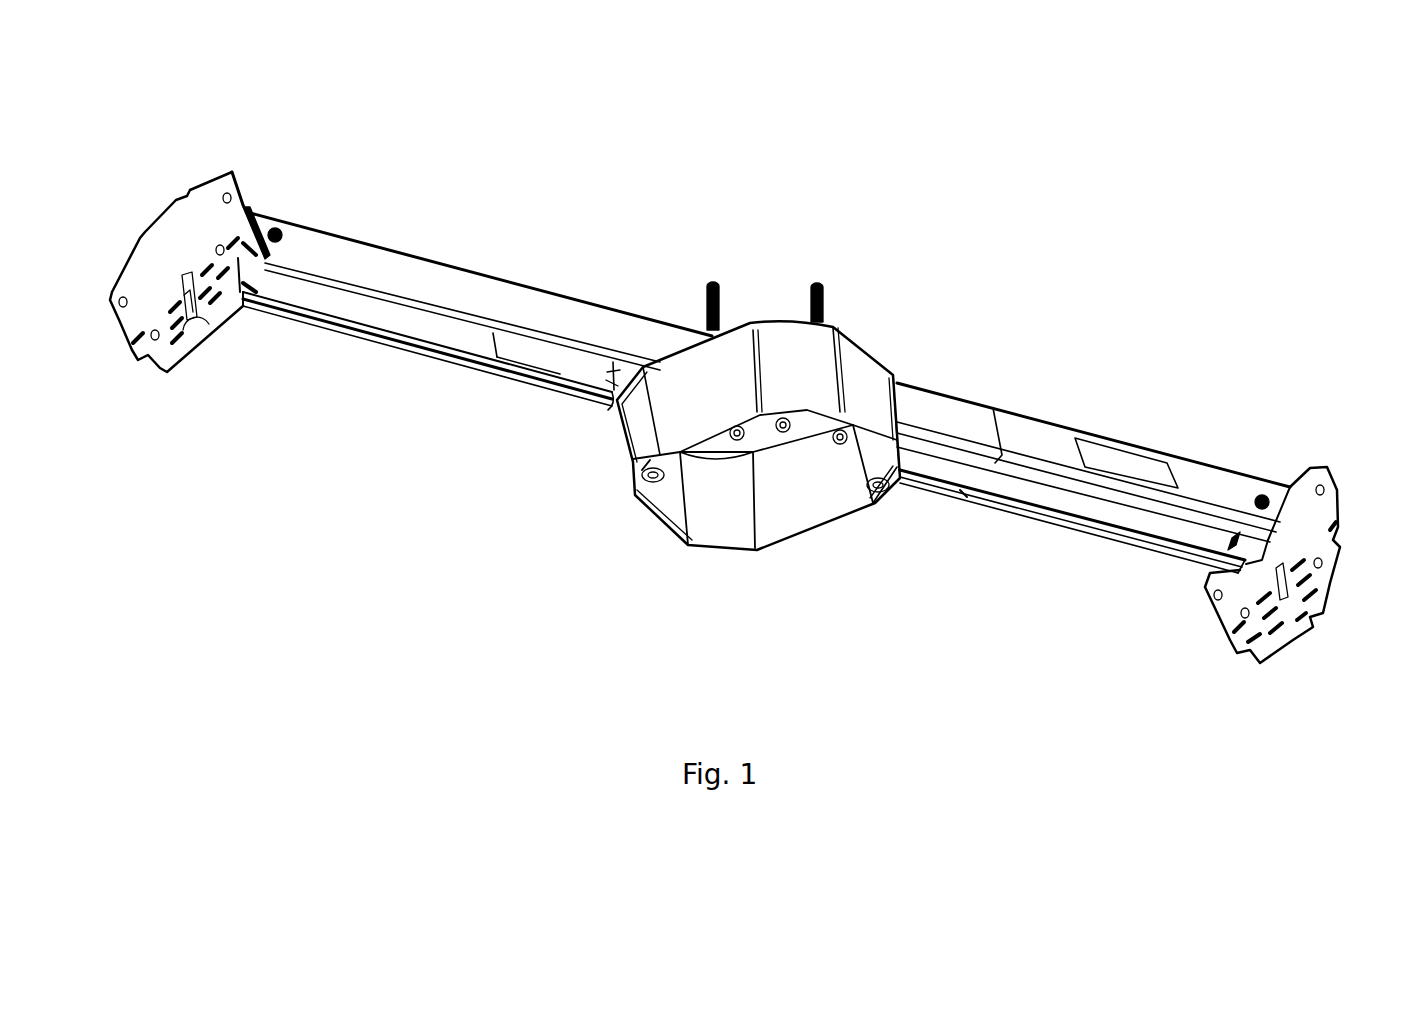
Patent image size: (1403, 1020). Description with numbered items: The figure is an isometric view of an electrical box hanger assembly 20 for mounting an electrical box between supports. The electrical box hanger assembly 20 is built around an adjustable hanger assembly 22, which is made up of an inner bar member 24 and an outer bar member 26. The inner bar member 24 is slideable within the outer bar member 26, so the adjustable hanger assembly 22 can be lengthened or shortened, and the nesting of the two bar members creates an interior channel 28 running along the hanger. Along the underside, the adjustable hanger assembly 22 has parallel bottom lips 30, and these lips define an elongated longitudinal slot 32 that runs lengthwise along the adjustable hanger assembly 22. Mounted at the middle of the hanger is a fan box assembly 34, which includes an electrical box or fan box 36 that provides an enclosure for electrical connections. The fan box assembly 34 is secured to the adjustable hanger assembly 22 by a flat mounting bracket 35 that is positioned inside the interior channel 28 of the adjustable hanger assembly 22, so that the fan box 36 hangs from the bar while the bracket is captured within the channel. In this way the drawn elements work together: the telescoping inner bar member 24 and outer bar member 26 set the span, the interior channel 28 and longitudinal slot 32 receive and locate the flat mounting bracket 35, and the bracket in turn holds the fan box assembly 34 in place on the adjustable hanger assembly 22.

The electrical box hanger assembly 20 is at (398, 178).
The adjustable hanger assembly 22 is at (1213, 482).
The inner bar member 24 is at (1102, 537).
The outer bar member 26 is at (423, 353).
The interior channel 28 is at (322, 303).
The parallel bottom lips 30 is at (505, 370).
The elongated longitudinal slot 32 is at (1018, 483).
The fan box assembly 34 is at (878, 321).
The flat mounting bracket 35 is at (610, 404).
The fan box 36 is at (817, 531).